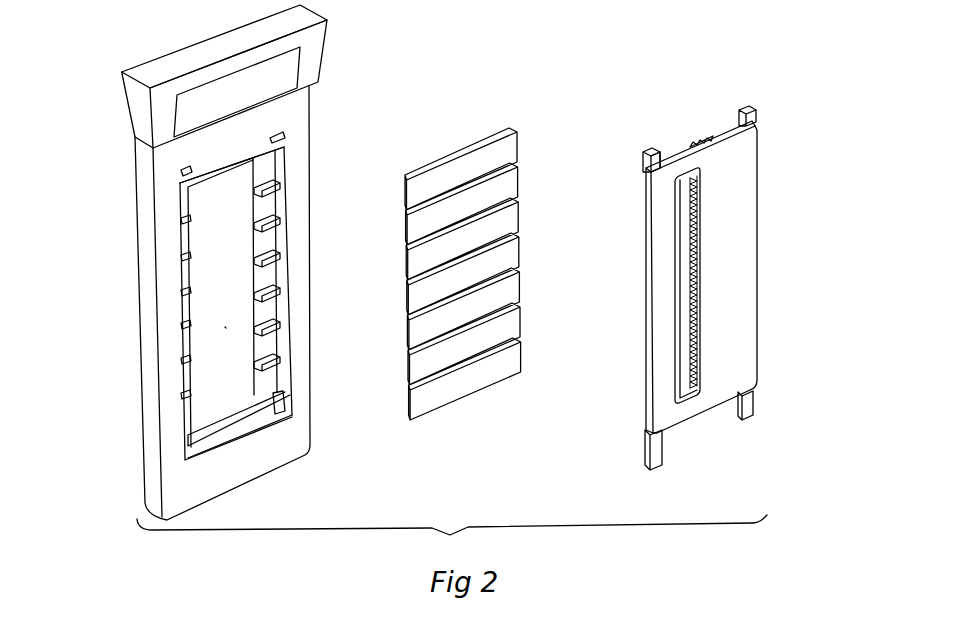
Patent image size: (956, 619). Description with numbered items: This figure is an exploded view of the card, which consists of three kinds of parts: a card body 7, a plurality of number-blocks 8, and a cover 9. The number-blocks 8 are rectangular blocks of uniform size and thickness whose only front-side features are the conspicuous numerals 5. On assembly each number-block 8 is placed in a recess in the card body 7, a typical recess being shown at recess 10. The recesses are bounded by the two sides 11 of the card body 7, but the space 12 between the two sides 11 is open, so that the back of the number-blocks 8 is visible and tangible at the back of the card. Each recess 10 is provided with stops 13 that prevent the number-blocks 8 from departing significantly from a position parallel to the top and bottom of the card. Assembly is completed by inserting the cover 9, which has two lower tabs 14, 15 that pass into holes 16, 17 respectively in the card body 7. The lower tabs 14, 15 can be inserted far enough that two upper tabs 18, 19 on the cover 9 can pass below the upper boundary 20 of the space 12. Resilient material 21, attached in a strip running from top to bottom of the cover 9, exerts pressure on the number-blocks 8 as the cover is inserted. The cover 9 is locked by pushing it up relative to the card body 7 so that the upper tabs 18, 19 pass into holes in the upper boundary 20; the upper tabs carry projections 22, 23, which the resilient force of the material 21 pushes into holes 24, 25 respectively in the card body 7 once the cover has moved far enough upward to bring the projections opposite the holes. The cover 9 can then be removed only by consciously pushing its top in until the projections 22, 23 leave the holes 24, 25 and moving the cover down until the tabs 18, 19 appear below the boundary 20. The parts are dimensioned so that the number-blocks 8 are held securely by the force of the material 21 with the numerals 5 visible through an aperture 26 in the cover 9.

The numerals 5 is at (491, 296).
The card body 7 is at (265, 118).
The number-blocks 8 is at (503, 150).
The cover 9 is at (745, 252).
The recess 10 is at (266, 207).
The sides 11 is at (300, 262).
The space 12 is at (285, 317).
The stops 13 is at (277, 227).
The lower tab 14 is at (657, 452).
The lower tab 15 is at (750, 408).
The hole 16 is at (188, 445).
The hole 17 is at (281, 410).
The upper tab 18 is at (642, 162).
The upper tab 19 is at (737, 123).
The upper boundary 20 is at (210, 177).
The resilient material 21 is at (690, 211).
The projection 22 is at (661, 153).
The projection 23 is at (755, 110).
The hole 24 is at (181, 172).
The hole 25 is at (285, 136).
The aperture 26 is at (680, 317).